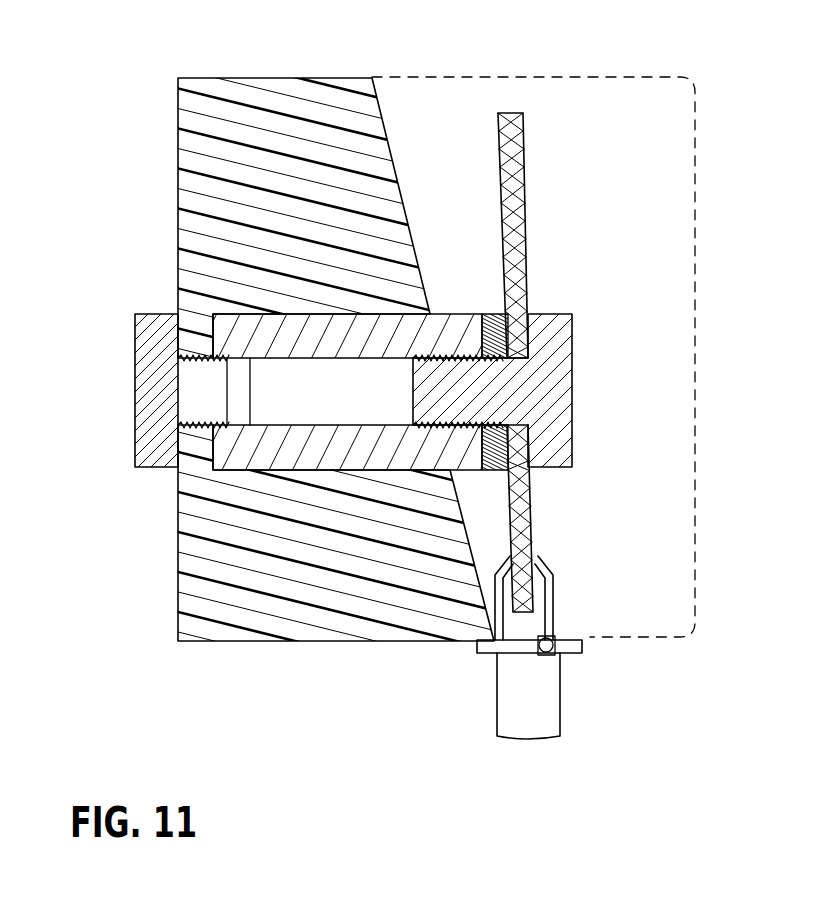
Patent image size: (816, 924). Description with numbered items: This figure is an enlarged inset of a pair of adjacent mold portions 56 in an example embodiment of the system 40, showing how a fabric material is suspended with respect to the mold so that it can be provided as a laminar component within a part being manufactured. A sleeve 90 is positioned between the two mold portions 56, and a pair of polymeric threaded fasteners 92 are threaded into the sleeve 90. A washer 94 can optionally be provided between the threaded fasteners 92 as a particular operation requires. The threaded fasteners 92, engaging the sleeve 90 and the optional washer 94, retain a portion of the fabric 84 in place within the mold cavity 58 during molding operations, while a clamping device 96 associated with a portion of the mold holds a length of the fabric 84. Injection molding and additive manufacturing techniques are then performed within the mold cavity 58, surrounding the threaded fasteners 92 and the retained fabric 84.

The system 40 is at (87, 41).
The mold portions 56 is at (262, 88).
The mold cavity 58 is at (666, 466).
The fabric 84 is at (528, 168).
The sleeve 90 is at (453, 313).
The polymeric threaded fasteners 92 is at (135, 360).
The washer 94 is at (495, 313).
The clamping device 96 is at (552, 695).